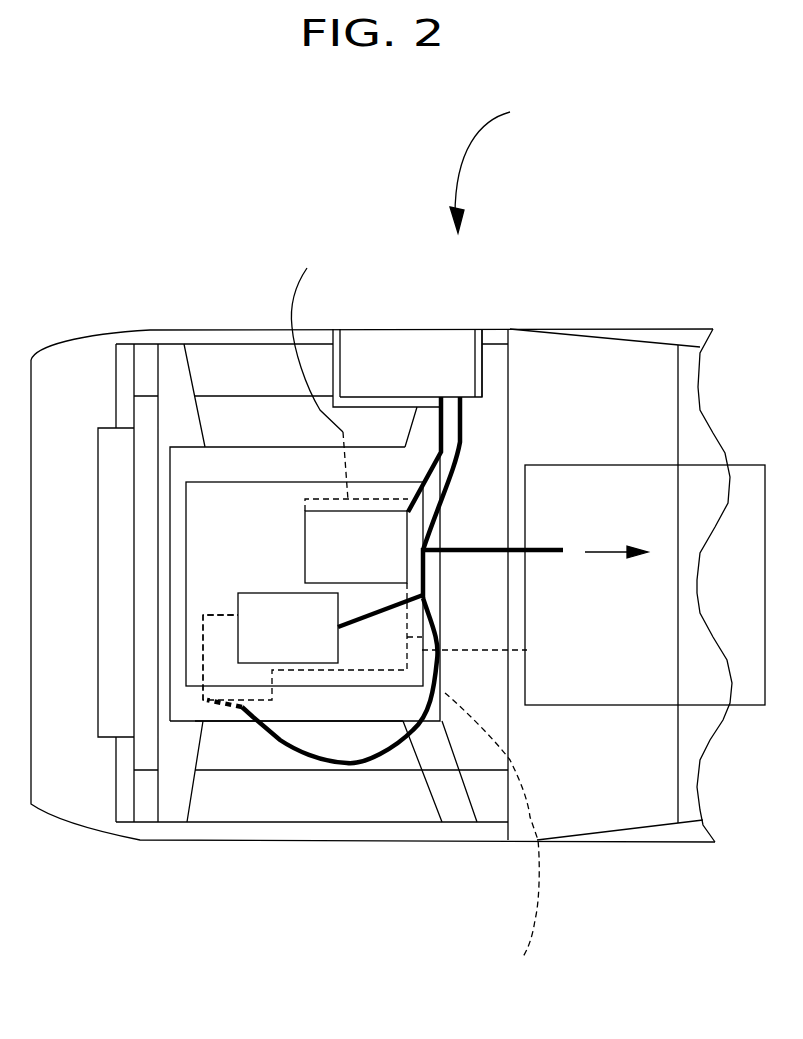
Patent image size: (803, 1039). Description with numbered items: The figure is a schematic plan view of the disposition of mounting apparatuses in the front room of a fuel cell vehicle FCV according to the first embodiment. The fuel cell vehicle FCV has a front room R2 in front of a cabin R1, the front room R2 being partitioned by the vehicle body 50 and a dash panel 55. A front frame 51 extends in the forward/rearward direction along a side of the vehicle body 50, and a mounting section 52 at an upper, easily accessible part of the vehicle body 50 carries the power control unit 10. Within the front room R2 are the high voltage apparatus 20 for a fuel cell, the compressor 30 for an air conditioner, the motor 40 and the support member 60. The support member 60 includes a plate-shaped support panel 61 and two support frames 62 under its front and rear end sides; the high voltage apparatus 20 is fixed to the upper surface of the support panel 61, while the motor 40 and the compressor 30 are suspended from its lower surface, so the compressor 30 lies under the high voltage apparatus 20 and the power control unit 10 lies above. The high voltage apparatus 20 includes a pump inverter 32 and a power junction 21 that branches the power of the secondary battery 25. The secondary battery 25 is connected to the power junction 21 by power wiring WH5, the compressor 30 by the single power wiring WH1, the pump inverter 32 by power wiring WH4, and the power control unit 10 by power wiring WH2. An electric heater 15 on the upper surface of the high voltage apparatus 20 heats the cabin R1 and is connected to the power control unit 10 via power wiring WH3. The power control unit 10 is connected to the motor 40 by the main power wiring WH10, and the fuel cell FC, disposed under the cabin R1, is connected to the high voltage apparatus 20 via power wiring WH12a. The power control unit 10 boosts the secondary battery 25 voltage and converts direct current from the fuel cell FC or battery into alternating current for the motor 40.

The fuel cell vehicle FCV is at (508, 165).
The vehicle body 50 is at (185, 327).
The front frame 51 is at (253, 808).
The high voltage apparatus for a fuel cell 20 is at (270, 502).
The power control unit 10 is at (393, 376).
The mounting section 52 is at (335, 328).
The dash panel 55 is at (513, 725).
The cabin R1 is at (617, 427).
The front room R2 is at (273, 441).
The fuel cell FC is at (628, 697).
The secondary battery 25 is at (624, 528).
The electric heater 15 is at (338, 563).
The pump inverter 32 is at (270, 638).
The compressor for an air conditioner 30 is at (203, 700).
The power junction 21 is at (413, 575).
The power wiring WH1 is at (260, 733).
The power wiring WH2 is at (450, 462).
The power wiring WH3 is at (463, 420).
The power wiring WH4 is at (365, 623).
The power wiring WH5 is at (484, 548).
The power wiring WH10 is at (317, 371).
The power wiring WH12a is at (455, 652).
The motor 40 is at (492, 843).
The support member 60 is at (429, 948).
The support panel 61 is at (373, 708).
The support frames 62 is at (442, 800).